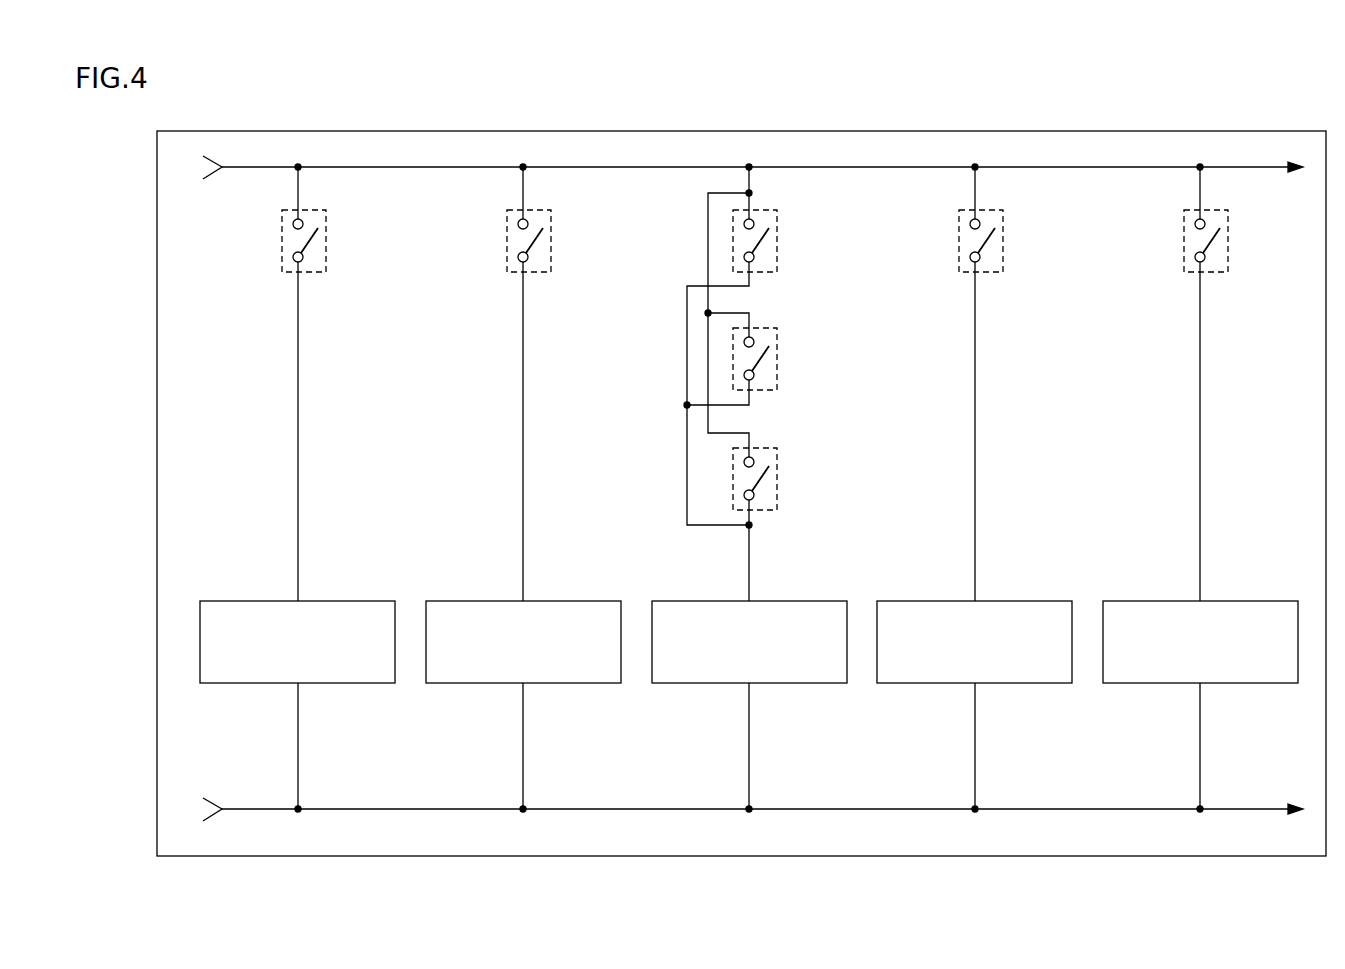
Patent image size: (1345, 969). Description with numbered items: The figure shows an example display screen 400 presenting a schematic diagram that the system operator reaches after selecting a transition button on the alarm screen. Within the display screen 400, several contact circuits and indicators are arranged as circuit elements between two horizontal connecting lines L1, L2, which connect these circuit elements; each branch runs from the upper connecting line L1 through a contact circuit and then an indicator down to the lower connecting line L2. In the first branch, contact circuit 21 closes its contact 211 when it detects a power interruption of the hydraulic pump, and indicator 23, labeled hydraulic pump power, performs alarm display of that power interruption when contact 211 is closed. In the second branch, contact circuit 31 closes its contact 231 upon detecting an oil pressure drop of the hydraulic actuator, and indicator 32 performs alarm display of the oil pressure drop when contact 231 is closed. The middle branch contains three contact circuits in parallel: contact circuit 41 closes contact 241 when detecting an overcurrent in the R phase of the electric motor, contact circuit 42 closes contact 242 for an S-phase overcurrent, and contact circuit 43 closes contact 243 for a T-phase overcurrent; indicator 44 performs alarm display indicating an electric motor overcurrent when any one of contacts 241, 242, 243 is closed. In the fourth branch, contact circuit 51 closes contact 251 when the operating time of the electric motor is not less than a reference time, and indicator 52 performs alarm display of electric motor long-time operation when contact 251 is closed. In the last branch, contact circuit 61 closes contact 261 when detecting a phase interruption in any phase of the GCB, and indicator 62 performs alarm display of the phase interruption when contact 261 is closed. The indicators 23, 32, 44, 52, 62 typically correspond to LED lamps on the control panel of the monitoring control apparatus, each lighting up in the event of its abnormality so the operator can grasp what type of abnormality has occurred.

The display screen 400 is at (1262, 131).
The connecting line L1 is at (1112, 167).
The connecting line L2 is at (1045, 810).
The contact circuit 21 is at (325, 210).
The contact 211 is at (310, 240).
The indicator 23 is at (345, 601).
The contact circuit 31 is at (550, 210).
The contact 231 is at (535, 240).
The indicator 32 is at (571, 601).
The contact circuit 41 is at (776, 210).
The contact 241 is at (761, 240).
The contact circuit 42 is at (776, 328).
The contact 242 is at (761, 358).
The contact circuit 43 is at (776, 448).
The contact 243 is at (761, 478).
The indicator 44 is at (797, 601).
The contact circuit 51 is at (1002, 210).
The contact 251 is at (987, 240).
The indicator 52 is at (1022, 601).
The contact circuit 61 is at (1227, 210).
The contact 261 is at (1212, 240).
The indicator 62 is at (1249, 601).